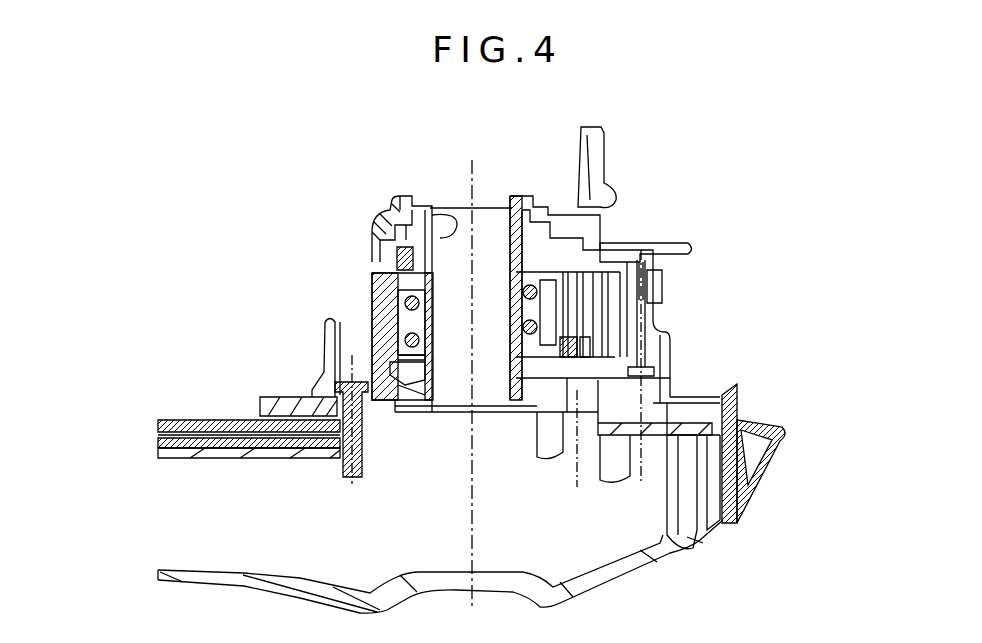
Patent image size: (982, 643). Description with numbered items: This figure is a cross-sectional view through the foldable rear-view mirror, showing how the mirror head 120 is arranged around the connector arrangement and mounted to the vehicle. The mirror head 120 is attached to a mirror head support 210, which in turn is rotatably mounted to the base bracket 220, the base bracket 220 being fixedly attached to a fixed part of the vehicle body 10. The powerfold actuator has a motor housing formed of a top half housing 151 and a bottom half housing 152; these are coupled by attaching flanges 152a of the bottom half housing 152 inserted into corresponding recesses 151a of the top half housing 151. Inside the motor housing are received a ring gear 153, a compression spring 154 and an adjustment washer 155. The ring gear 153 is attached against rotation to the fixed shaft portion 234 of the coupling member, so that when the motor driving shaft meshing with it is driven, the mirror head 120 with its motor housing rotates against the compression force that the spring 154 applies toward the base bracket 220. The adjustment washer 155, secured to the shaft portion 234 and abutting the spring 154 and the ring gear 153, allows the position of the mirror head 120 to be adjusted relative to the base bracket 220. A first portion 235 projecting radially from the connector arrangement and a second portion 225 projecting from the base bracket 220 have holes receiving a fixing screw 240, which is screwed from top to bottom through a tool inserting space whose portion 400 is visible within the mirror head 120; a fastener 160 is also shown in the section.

The vehicle body panel 10 is at (760, 477).
The mirror head 120 is at (783, 433).
The top half housing 151 is at (597, 152).
The recesses 151a is at (415, 405).
The bottom half housing 152 is at (670, 383).
The attaching flanges 152a is at (467, 469).
The ring gear 153 is at (385, 320).
The compression spring 154 is at (543, 270).
The adjustment washer 155 is at (403, 270).
The fastening bolt 160 is at (630, 335).
The mirror head support 210 is at (680, 338).
The base bracket 220 is at (150, 447).
The second portion 225 is at (285, 420).
The shaft portion 234 is at (455, 217).
The first portion 235 is at (317, 382).
The fixing screw 240 is at (340, 458).
The portion of tool inserting space 400 is at (347, 318).